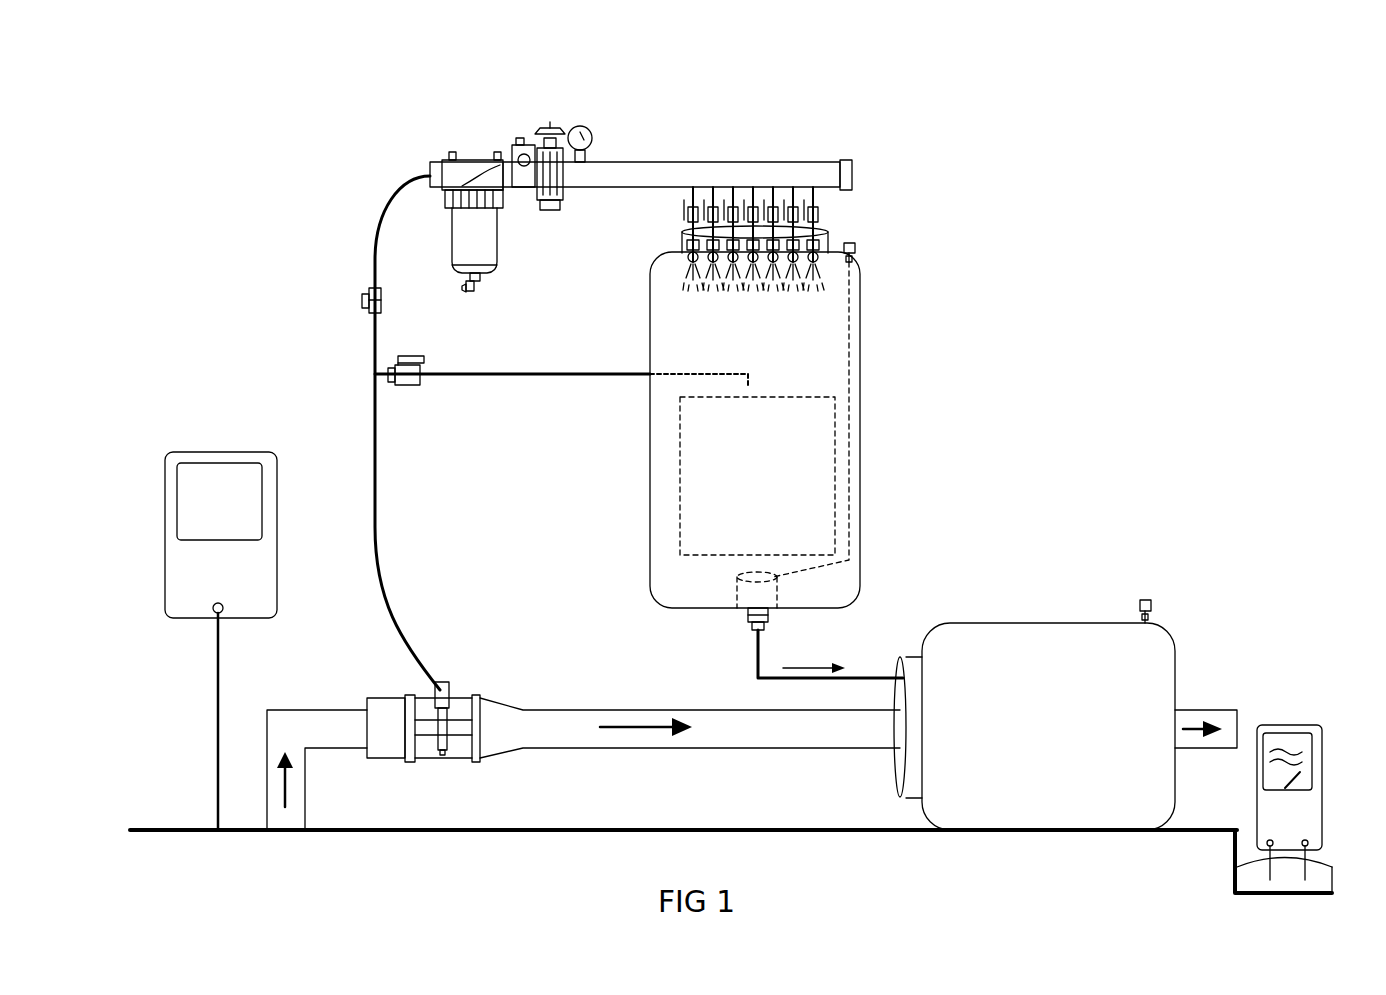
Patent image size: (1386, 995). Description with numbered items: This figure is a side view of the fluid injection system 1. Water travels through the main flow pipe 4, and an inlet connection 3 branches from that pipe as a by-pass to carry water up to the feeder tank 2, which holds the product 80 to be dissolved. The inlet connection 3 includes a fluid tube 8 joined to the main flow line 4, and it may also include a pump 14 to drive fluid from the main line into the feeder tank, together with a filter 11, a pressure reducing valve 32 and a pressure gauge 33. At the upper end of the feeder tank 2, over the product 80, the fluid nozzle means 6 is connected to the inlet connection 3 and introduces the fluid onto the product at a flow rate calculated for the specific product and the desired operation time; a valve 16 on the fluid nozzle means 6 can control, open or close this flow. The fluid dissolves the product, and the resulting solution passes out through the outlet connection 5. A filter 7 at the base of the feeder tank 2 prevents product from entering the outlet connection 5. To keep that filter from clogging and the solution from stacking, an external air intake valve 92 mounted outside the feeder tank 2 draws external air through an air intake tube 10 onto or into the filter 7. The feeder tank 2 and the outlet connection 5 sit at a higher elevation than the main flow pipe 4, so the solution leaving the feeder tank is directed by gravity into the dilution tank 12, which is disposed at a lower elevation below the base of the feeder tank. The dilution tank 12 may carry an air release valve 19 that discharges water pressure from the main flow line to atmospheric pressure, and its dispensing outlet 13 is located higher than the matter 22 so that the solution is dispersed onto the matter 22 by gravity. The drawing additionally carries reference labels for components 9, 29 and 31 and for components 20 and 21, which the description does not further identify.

The dust suppression test system 1 is at (171, 227).
The feeder tank 2 is at (860, 338).
The inlet connection 3 is at (768, 162).
The main flow pipe 4 is at (327, 710).
The outlet connection 5 is at (880, 670).
The fluid nozzle means 6 is at (820, 195).
The filter 7 is at (738, 595).
The fluid tube 8 is at (375, 417).
The shut-off valve 9 is at (362, 292).
The air intake tube 10 is at (850, 525).
The filter 11 is at (468, 158).
The dilution tank 12 is at (1045, 623).
The dispensing outlet 13 is at (1237, 710).
The pump 14 is at (450, 690).
The valve 16 is at (820, 220).
The air release valve 19 is at (1146, 600).
The control unit 20 is at (165, 556).
The measuring instrument 21 is at (1285, 725).
The matter 22 is at (1250, 875).
The control valve 29 is at (412, 386).
The control line 31 is at (530, 374).
The pressure reducing valve 32 is at (547, 128).
The pressure gauge 33 is at (592, 132).
The product 80 is at (790, 397).
The external air intake valve 92 is at (855, 255).